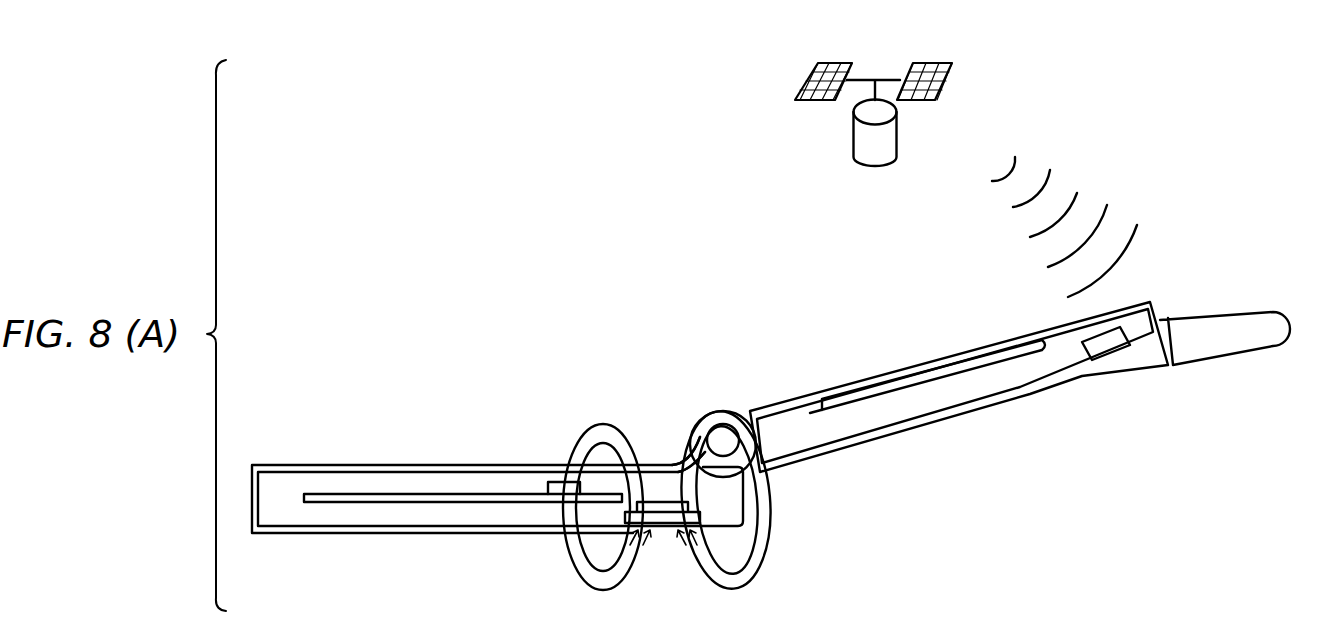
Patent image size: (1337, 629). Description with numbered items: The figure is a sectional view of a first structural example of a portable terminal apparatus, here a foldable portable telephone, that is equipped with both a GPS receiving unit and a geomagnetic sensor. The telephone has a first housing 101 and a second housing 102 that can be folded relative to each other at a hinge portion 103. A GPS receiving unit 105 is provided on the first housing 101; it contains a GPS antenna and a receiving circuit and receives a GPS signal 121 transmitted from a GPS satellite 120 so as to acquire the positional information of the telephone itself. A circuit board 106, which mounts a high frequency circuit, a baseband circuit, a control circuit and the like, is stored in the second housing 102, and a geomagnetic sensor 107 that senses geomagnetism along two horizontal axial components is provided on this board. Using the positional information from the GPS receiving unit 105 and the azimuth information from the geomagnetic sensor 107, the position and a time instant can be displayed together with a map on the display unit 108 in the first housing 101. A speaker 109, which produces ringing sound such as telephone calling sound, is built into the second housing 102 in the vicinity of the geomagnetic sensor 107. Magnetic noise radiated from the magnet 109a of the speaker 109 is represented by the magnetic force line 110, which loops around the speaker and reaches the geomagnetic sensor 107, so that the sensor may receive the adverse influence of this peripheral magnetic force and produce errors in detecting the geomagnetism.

The first housing 101 is at (970, 410).
The second housing 102 is at (340, 465).
The hinge portion 103 is at (723, 435).
The GPS receiving unit 105 is at (1105, 347).
The circuit board 106 is at (420, 494).
The geomagnetic sensor 107 is at (556, 482).
The display unit 108 is at (960, 360).
The speaker 109 is at (665, 525).
The magnet 109a is at (673, 458).
The magnetic force line 110 is at (600, 425).
The GPS satellite 120 is at (868, 140).
The GPS signal 121 is at (1076, 185).